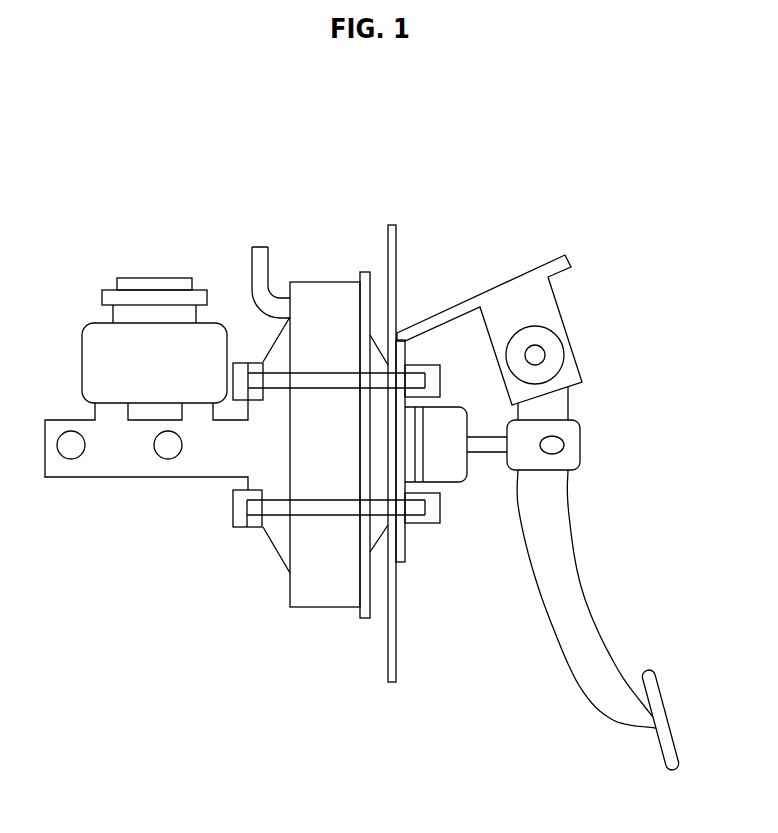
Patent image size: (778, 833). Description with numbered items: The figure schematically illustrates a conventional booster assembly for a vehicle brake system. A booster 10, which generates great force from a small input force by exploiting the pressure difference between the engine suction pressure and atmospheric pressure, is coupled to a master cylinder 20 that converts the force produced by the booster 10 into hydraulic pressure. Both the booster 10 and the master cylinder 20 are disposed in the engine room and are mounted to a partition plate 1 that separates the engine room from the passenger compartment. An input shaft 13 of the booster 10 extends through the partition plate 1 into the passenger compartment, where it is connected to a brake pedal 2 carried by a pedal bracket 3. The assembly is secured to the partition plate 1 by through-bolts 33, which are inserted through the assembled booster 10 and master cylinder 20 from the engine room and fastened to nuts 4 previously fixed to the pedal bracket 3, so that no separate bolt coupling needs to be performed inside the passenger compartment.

The partition plate 1 is at (396, 648).
The brake pedal 2 is at (578, 587).
The pedal bracket 3 is at (508, 288).
The nuts 4 is at (440, 512).
The booster 10 is at (317, 280).
The input shaft 13 is at (490, 452).
The master cylinder 20 is at (119, 478).
The through-bolts 33 is at (278, 512).